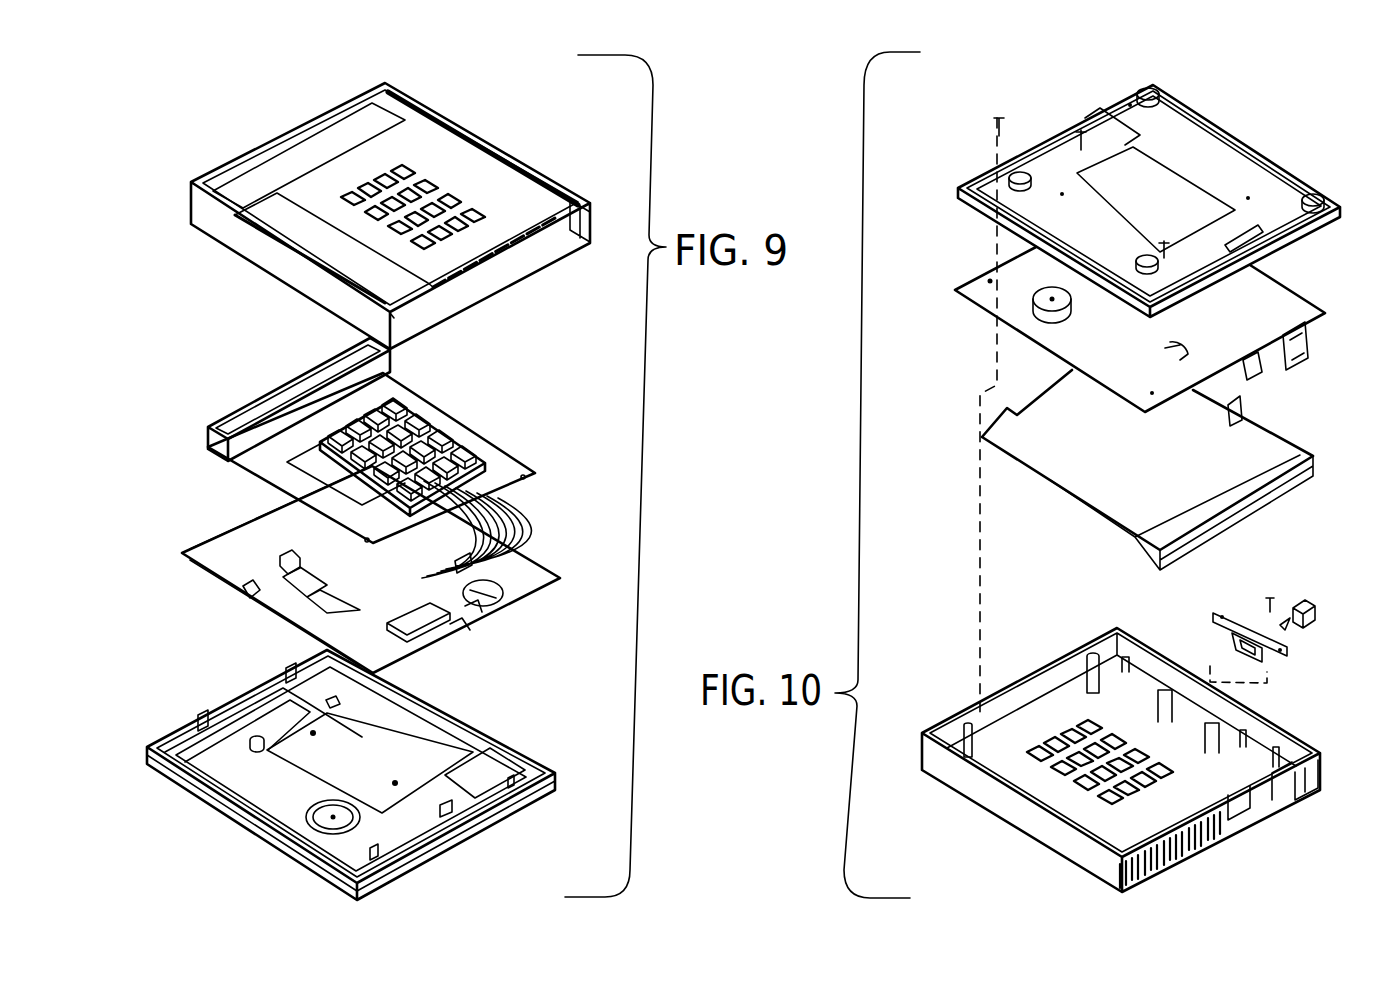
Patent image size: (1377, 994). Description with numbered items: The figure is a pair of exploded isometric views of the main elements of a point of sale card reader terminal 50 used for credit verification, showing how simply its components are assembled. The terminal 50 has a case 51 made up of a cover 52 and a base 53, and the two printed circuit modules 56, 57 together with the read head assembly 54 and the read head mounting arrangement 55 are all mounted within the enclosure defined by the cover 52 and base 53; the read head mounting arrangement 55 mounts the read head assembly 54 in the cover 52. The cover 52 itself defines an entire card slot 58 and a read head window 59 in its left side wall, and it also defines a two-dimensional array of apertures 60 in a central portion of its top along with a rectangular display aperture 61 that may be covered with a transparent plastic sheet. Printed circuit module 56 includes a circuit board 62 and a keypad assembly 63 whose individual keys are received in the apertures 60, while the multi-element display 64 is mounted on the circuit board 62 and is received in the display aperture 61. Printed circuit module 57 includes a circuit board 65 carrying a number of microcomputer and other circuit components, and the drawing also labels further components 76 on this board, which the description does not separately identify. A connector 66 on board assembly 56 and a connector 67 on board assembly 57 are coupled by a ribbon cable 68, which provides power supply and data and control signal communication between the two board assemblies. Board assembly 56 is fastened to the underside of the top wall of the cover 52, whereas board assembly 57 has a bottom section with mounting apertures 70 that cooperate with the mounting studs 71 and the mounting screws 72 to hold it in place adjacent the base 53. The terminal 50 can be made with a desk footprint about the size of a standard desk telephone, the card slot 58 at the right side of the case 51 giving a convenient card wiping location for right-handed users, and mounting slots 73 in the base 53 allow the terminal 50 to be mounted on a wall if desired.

In FIG. 9, the terminal 50 is at (597, 362).
In FIG. 10, the terminal 50 is at (1327, 547).
In FIG. 9, the case 51 is at (400, 216).
In FIG. 9, the cover 52 is at (477, 297).
In FIG. 9, the base 53 is at (465, 830).
In FIG. 10, the read head assembly 54 is at (1313, 623).
In FIG. 10, the read head mounting arrangement 55 is at (1280, 666).
In FIG. 9, the printed circuit module 56 is at (385, 475).
In FIG. 9, the printed circuit module 57 is at (385, 571).
In FIG. 9, the card slot 58 is at (563, 197).
In FIG. 10, the card slot 58 is at (1315, 782).
In FIG. 10, the read head window 59 is at (1240, 707).
In FIG. 9, the apertures 60 is at (428, 188).
In FIG. 9, the display aperture 61 is at (333, 118).
In FIG. 9, the circuit board 62 is at (245, 458).
In FIG. 9, the keypad assembly 63 is at (427, 413).
In FIG. 9, the multi-element display 64 is at (387, 358).
In FIG. 9, the circuit board 65 is at (223, 570).
In FIG. 9, the connector 66 is at (283, 498).
In FIG. 9, the connector 67 is at (283, 573).
In FIG. 9, the ribbon cable 68 is at (503, 520).
In FIG. 10, the mounting apertures 70 is at (988, 280).
In FIG. 10, the mounting studs 71 is at (1092, 660).
In FIG. 10, the mounting screws 72 is at (1002, 132).
In FIG. 10, the mounting slots 73 is at (1080, 143).
In FIG. 9, the speaker/buzzer 76 is at (523, 587).